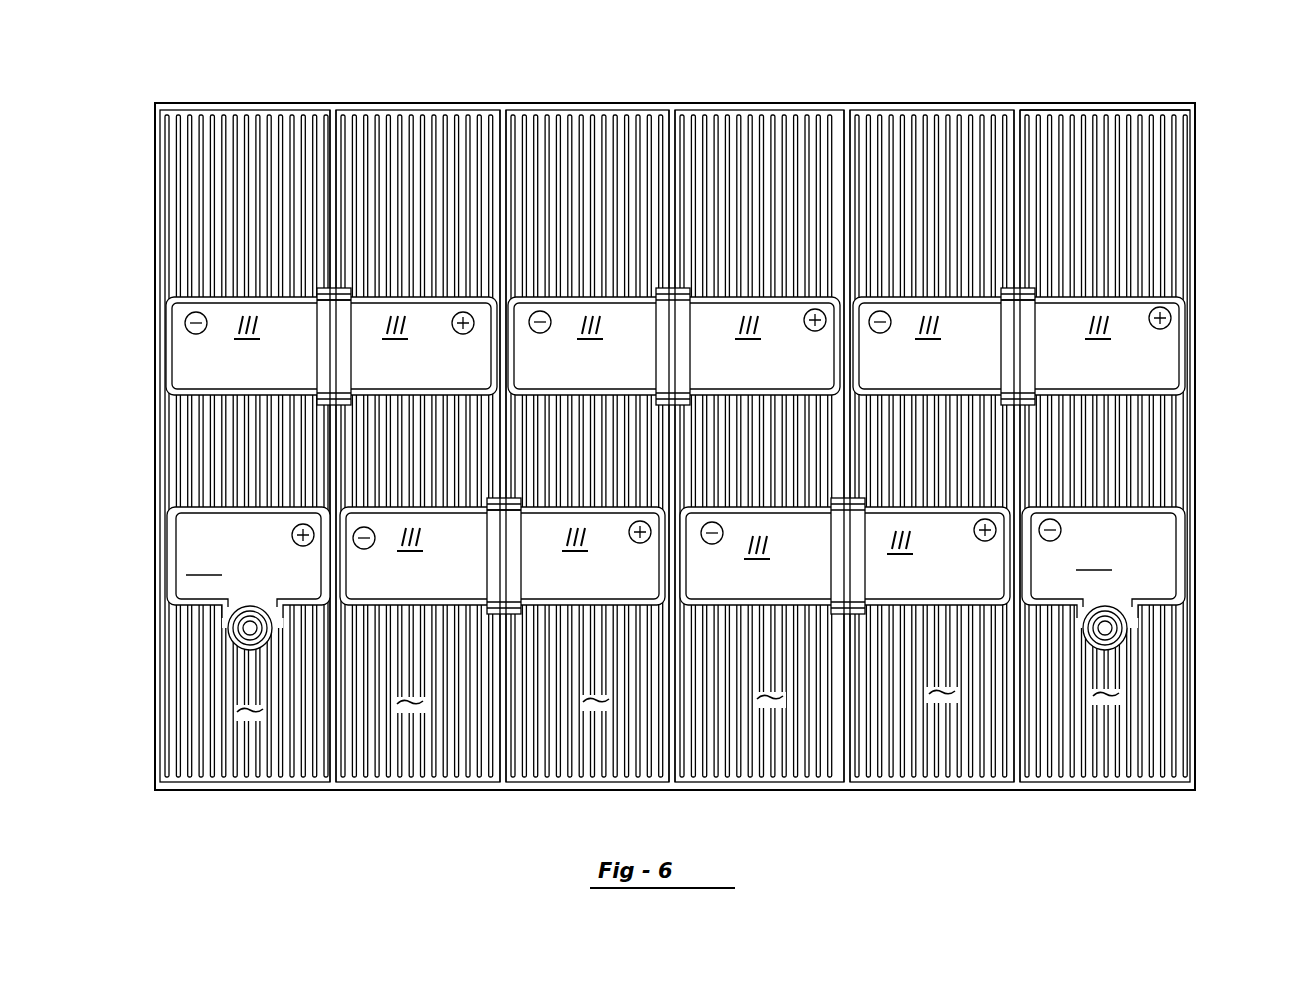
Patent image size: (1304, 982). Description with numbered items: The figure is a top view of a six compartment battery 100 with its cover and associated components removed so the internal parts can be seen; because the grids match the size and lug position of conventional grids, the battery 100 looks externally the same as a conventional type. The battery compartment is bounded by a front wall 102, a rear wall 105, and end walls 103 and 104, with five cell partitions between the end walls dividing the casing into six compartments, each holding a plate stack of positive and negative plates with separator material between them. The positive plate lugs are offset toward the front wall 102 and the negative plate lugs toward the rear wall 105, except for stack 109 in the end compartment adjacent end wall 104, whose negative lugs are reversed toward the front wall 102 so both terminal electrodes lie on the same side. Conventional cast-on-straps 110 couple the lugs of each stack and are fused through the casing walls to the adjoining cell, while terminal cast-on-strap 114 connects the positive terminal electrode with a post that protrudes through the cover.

The battery 100 is at (348, 852).
The front wall 102 is at (250, 790).
The end wall 103 is at (155, 705).
The end wall 104 is at (1200, 437).
The rear wall 105 is at (785, 100).
The stack 109 is at (1172, 205).
The cast-on-strap 110 is at (1140, 291).
The cast-on-strap 114 is at (204, 558).